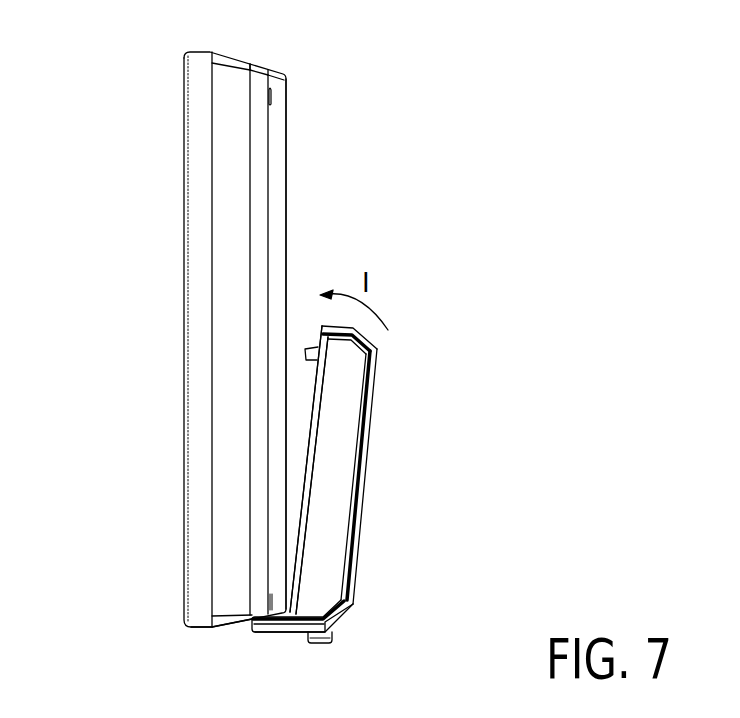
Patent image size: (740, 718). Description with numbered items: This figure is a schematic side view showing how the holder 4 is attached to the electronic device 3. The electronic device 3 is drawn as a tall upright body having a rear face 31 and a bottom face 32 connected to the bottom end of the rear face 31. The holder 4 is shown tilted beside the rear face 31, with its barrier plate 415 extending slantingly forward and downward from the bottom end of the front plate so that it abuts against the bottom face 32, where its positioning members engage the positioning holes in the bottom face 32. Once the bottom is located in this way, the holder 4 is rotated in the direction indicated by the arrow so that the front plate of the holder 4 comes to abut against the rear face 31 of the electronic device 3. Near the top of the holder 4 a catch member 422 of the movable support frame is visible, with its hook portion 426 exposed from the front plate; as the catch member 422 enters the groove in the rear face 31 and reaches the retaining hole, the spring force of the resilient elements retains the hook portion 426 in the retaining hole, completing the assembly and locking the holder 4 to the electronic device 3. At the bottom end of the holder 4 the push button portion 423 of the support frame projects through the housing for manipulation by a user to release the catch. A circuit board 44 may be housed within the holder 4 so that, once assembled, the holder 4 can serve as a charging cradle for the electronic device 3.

The electronic device 3 is at (150, 132).
The rear face 31 is at (286, 425).
The bottom face 32 is at (258, 616).
The holder 4 is at (409, 375).
The hook portion 426 is at (308, 347).
The catch member 422 is at (316, 368).
The circuit board 44 is at (307, 470).
The push button portion 423 is at (320, 627).
The barrier plate 415 is at (287, 625).